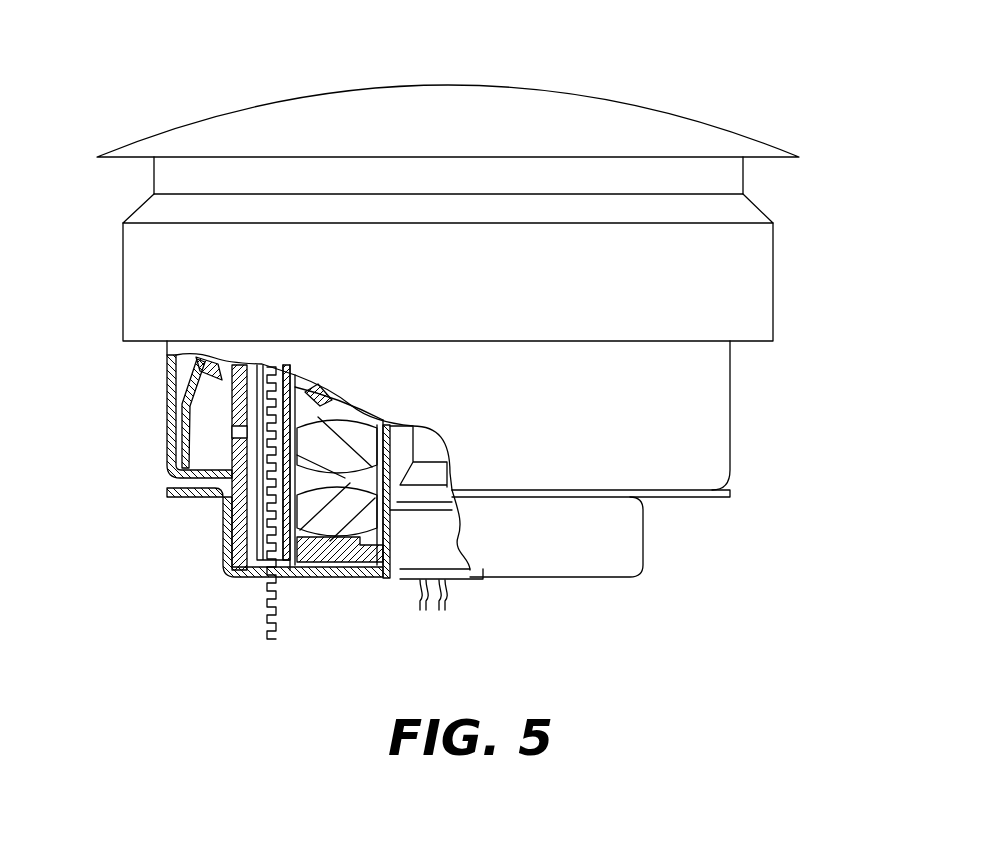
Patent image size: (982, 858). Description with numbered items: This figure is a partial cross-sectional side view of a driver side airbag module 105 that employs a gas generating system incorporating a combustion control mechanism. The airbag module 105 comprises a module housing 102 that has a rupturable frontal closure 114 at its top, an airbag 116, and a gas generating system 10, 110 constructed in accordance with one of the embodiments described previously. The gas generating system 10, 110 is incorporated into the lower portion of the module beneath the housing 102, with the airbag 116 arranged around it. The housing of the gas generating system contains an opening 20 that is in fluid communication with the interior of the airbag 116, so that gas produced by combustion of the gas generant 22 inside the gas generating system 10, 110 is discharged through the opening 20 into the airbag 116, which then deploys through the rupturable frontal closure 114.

The driver side airbag module 105 is at (745, 111).
The rupturable frontal closure 114 is at (647, 103).
The module housing 102 is at (681, 285).
The airbag 116 is at (168, 406).
The opening 20 is at (237, 432).
The gas generant 22 is at (340, 450).
The gas generating system 10 is at (296, 505).
The gas generating system 110 is at (291, 535).